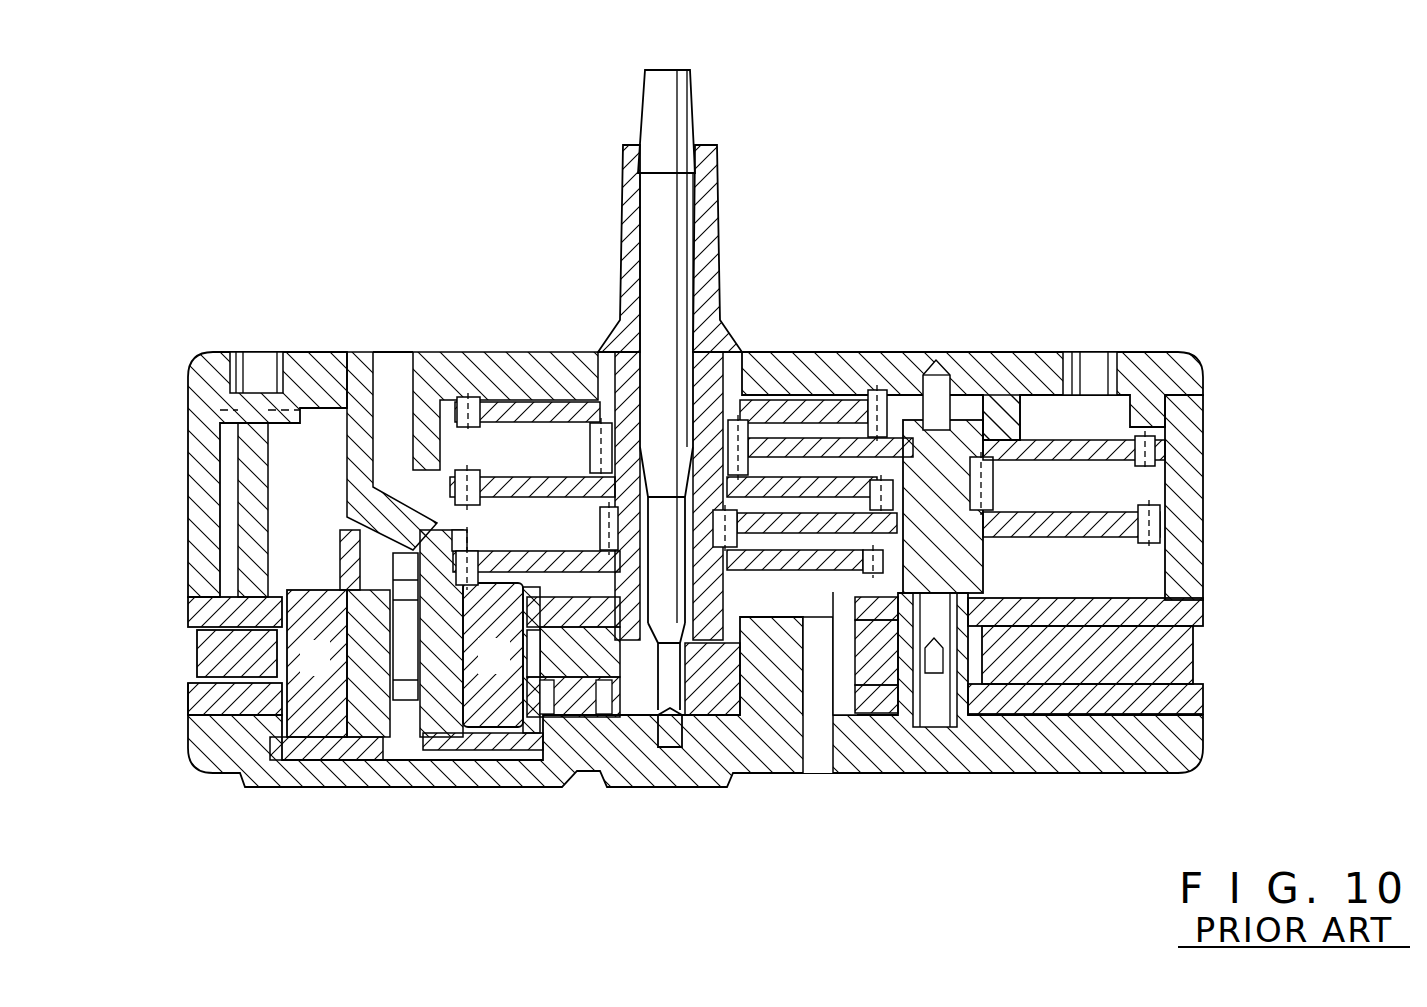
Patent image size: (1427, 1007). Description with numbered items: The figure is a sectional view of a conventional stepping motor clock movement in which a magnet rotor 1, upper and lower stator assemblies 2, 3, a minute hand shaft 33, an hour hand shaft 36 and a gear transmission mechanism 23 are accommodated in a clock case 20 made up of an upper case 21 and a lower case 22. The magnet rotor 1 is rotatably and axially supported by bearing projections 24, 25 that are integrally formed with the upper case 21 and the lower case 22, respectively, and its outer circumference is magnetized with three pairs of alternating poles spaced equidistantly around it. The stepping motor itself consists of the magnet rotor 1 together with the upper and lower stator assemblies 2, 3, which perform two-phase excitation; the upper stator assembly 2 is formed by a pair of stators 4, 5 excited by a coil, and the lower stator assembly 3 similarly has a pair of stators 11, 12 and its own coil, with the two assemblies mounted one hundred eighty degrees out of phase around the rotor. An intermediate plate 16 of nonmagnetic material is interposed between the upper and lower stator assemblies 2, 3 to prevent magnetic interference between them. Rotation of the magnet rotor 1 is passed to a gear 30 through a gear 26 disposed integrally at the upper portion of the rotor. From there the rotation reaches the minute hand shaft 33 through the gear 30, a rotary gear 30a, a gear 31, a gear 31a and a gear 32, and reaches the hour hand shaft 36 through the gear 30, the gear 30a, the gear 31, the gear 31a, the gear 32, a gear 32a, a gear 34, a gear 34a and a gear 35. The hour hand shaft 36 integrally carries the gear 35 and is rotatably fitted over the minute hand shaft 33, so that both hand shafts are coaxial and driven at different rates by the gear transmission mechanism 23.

The magnet rotor 1 is at (320, 573).
The upper stator assembly 2 is at (186, 612).
The lower stator assembly 3 is at (186, 700).
The stator 4 is at (1110, 612).
The stator 5 is at (188, 583).
The stator 11 is at (1093, 712).
The stator 12 is at (198, 698).
The intermediate plate 16 is at (200, 657).
The clock case 20 is at (1277, 613).
The upper case 21 is at (1197, 582).
The lower case 22 is at (1193, 725).
The gear transmission mechanism 23 is at (1155, 490).
The bearing projection 24 is at (410, 560).
The bearing projection 25 is at (398, 697).
The gear 26 is at (470, 545).
The gear 30 is at (518, 551).
The rotary gear 30a is at (602, 522).
The gear 31 is at (1045, 527).
The gear 31a is at (993, 483).
The gear 32 is at (500, 477).
The gear 32a is at (590, 453).
The minute hand shaft 33 is at (678, 267).
The gear 34 is at (1155, 450).
The gear 34a is at (992, 430).
The gear 35 is at (812, 408).
The hour hand shaft 36 is at (720, 222).